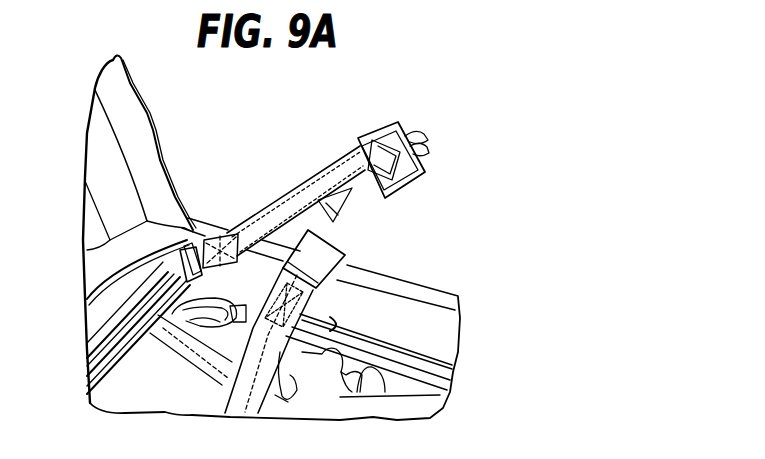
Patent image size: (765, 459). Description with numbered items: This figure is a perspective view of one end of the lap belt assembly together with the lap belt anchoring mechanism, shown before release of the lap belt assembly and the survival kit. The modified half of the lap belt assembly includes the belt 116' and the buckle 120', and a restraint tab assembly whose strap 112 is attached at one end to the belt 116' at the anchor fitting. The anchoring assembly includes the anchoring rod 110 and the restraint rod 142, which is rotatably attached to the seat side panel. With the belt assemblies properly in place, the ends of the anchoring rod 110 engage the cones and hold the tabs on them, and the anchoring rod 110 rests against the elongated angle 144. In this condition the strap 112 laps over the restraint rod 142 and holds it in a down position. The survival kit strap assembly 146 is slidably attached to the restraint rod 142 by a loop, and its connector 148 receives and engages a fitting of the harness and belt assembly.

The anchoring rod 110 is at (89, 376).
The strap 112 is at (220, 233).
The belt 116' is at (296, 199).
The buckle 120' is at (396, 144).
The restraint rod 142 is at (322, 317).
The elongated angle 144 is at (116, 334).
The survival kit strap assembly 146 is at (217, 380).
The connector 148 is at (314, 257).